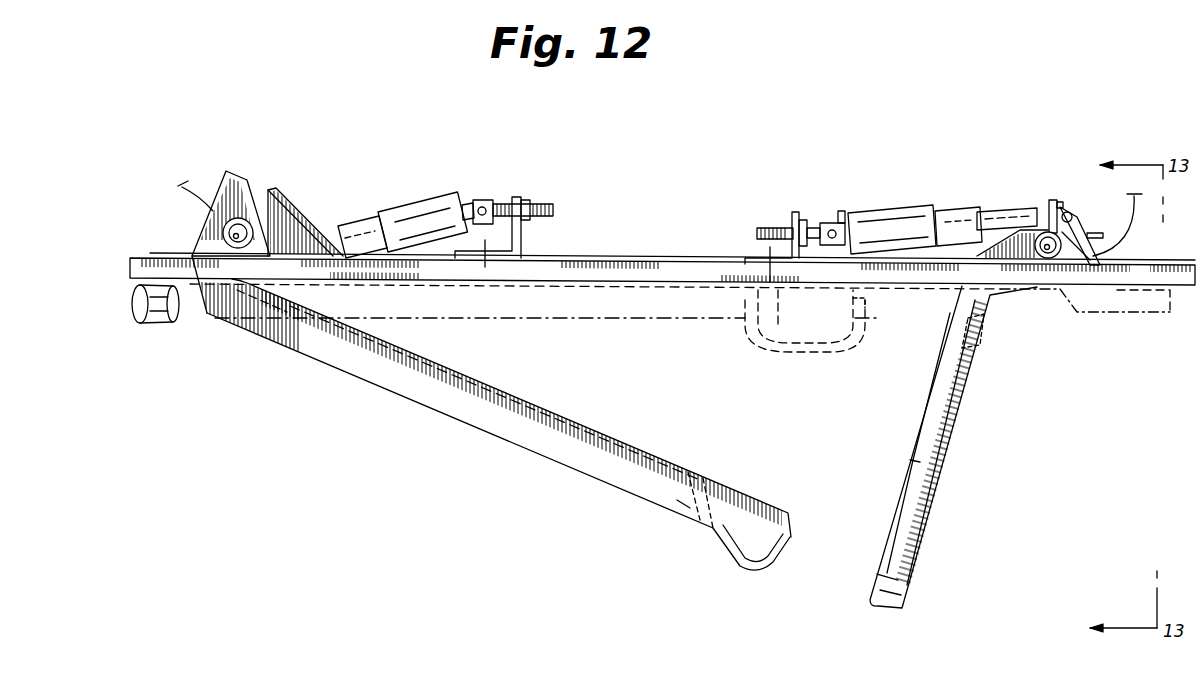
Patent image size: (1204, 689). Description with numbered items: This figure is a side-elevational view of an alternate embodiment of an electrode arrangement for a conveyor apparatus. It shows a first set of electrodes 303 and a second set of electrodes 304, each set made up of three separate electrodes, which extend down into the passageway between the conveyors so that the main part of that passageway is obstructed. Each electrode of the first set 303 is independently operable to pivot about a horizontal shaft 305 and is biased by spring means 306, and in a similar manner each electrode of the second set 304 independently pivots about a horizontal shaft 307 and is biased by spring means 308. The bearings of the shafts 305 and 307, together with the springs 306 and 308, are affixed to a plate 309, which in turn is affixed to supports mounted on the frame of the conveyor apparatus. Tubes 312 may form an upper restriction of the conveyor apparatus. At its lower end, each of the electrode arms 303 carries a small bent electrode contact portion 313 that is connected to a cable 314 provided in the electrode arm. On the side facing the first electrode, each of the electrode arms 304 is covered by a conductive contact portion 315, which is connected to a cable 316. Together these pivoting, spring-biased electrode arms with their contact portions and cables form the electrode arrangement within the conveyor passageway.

The first set of electrodes 303 is at (548, 298).
The second set of electrodes 304 is at (920, 503).
The horizontal shaft 305 is at (252, 217).
The spring means 306 is at (411, 215).
The horizontal shaft 307 is at (1037, 207).
The spring means 308 is at (883, 222).
The plate 309 is at (657, 268).
The tubes 312 is at (160, 320).
The bent electrode contact portion 313 is at (733, 562).
The cable 314 is at (652, 458).
The conductive contact portion 315 is at (923, 415).
The cable 316 is at (985, 328).